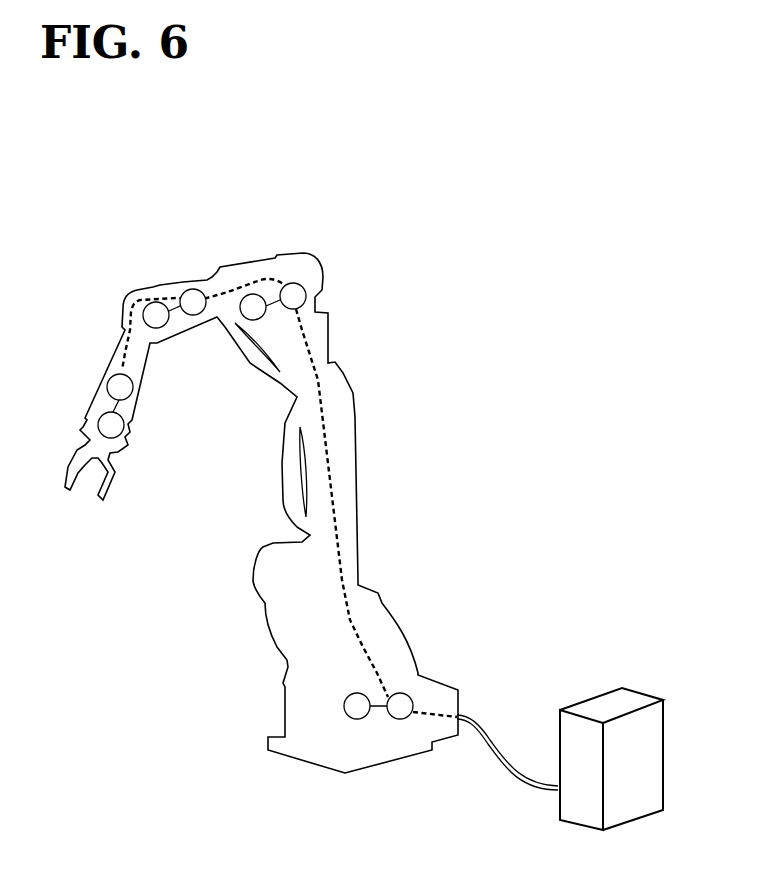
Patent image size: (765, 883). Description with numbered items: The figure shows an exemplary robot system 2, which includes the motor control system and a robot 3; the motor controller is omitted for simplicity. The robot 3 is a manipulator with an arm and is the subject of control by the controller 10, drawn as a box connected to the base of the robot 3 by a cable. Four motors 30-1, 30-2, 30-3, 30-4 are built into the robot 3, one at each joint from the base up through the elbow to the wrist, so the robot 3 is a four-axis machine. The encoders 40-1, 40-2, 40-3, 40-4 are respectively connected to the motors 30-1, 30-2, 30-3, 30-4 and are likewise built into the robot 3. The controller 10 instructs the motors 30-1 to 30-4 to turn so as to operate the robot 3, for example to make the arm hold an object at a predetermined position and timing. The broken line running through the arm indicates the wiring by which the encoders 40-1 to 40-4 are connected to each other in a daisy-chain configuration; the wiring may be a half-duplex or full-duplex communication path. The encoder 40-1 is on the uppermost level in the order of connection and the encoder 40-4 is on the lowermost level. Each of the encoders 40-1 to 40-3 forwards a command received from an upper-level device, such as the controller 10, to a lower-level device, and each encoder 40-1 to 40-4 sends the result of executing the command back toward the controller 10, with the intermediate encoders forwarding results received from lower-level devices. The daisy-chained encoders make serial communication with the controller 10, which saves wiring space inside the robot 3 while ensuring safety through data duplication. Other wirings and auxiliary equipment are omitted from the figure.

The robot system 2 is at (365, 250).
The robot 3 is at (358, 440).
The controller 10 is at (580, 826).
The motor 30-1 is at (356, 720).
The motor 30-2 is at (251, 294).
The motor 30-3 is at (152, 301).
The motor 30-4 is at (124, 426).
The encoder 40-1 is at (401, 720).
The encoder 40-2 is at (307, 297).
The encoder 40-3 is at (190, 316).
The encoder 40-4 is at (133, 389).